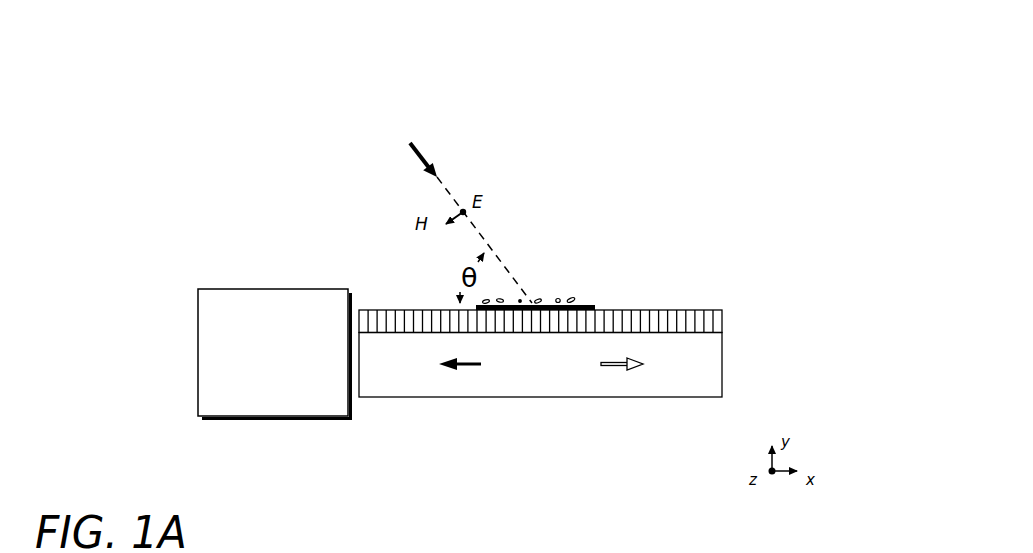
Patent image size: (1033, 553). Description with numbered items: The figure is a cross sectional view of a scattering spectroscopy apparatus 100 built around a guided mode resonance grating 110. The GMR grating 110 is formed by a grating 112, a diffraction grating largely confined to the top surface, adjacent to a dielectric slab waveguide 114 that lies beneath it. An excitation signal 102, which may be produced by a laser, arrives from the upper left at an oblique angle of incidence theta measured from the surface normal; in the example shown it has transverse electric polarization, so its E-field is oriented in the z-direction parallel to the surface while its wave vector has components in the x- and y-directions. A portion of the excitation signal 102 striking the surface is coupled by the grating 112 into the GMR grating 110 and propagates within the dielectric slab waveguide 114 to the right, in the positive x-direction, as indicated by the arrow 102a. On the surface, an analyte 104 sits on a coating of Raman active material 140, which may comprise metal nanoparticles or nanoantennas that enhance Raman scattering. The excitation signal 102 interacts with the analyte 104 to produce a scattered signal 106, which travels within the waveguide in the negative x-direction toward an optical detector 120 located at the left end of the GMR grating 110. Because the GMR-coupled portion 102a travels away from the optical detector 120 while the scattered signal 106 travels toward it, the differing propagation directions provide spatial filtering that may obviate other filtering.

The scattering spectroscopy apparatus 100 is at (732, 50).
The excitation signal 102 is at (428, 150).
The propagation direction of GMR-coupled portion 102a is at (615, 366).
The analyte 104 is at (567, 251).
The scattered signal 106 is at (470, 366).
The guided mode resonance (GMR) grating 110 is at (749, 274).
The grating 112 is at (722, 320).
The dielectric slab waveguide 114 is at (722, 363).
The optical detector 120 is at (273, 289).
The Raman active material 140 is at (590, 304).